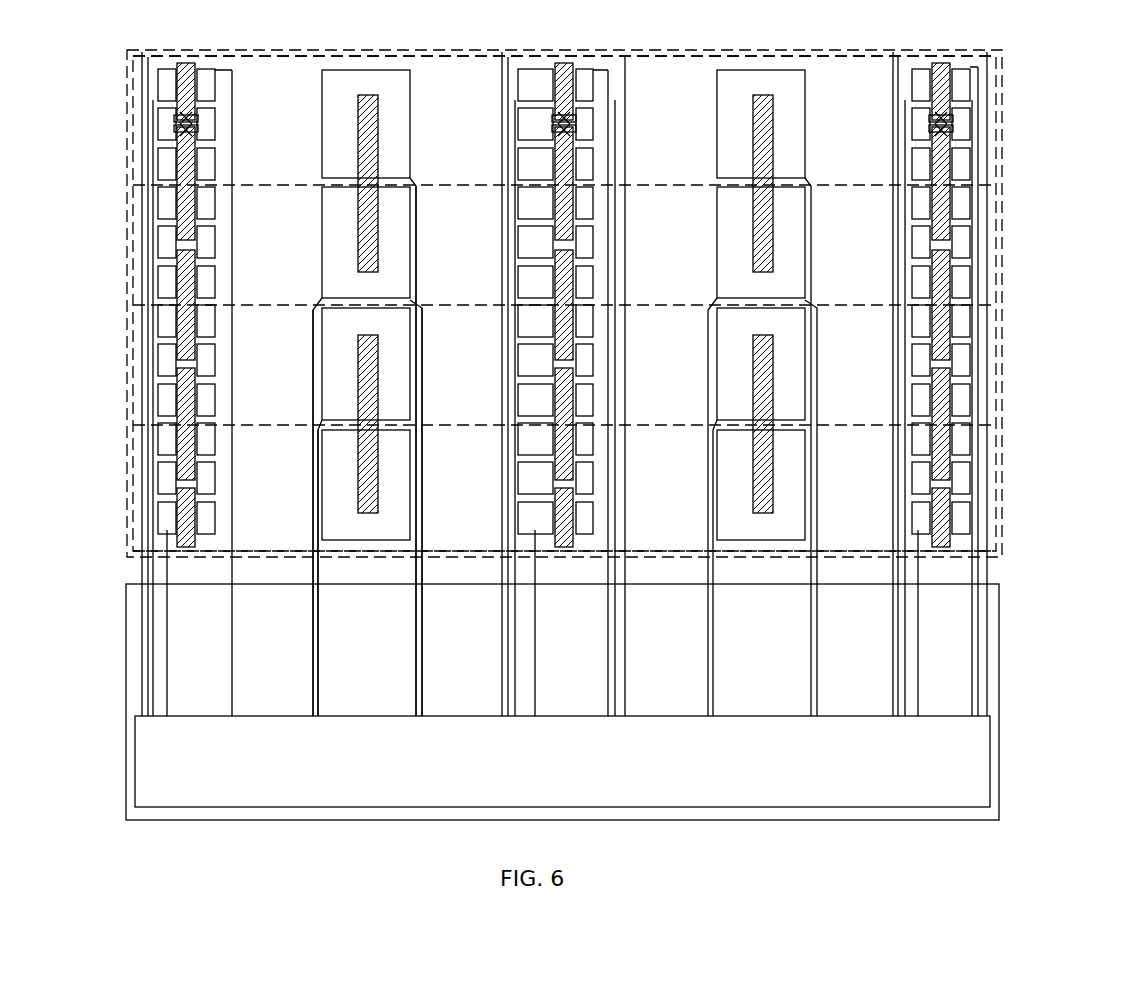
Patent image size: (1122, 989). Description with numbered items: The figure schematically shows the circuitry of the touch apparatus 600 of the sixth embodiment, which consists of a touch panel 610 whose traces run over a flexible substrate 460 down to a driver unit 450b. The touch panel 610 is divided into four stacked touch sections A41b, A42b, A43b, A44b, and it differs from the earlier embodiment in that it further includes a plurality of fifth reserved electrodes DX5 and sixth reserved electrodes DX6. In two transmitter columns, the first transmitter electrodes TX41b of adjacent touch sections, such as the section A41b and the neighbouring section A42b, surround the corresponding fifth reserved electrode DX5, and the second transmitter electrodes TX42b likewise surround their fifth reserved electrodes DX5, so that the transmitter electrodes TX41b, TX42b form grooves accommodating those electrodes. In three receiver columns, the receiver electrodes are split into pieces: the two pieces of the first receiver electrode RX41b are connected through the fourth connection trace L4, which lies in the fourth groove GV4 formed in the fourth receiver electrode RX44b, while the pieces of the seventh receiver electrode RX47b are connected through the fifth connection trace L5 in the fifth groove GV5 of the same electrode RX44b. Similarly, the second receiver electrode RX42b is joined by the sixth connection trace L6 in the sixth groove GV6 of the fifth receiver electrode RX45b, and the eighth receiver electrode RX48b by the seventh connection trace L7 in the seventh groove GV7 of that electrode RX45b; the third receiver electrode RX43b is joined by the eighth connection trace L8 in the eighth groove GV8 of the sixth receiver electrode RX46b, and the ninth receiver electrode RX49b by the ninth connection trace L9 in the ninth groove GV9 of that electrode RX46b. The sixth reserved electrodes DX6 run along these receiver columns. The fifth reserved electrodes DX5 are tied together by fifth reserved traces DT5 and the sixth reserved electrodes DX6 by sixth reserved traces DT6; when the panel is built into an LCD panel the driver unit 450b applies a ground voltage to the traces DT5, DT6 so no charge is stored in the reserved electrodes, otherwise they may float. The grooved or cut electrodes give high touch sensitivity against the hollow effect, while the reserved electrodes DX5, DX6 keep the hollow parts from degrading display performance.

The touch apparatus 600 is at (606, 442).
The touch panel 610 is at (1003, 67).
The flexible substrate 460 is at (1000, 681).
The driver unit 450b is at (990, 762).
The touch section A41b is at (1003, 178).
The touch section A42b is at (1003, 280).
The touch section A43b is at (1003, 400).
The touch section A44b is at (1003, 520).
The fifth reserved trace DT5 is at (422, 195).
The sixth reserved trace DT6 is at (140, 57).
The fifth reserved electrode DX5 is at (358, 210).
The sixth reserved electrode DX6 is at (185, 63).
The first transmitter electrode TX41b is at (367, 392).
The second transmitter electrode TX42b is at (762, 392).
The first receiver electrode RX41b is at (135, 301).
The second receiver electrode RX42b is at (515, 301).
The third receiver electrode RX43b is at (900, 301).
The fourth receiver electrode RX44b is at (135, 301).
The fifth receiver electrode RX45b is at (515, 301).
The sixth receiver electrode RX46b is at (900, 301).
The seventh receiver electrode RX47b is at (135, 301).
The eighth receiver electrode RX48b is at (515, 301).
The ninth receiver electrode RX49b is at (900, 301).
The fourth groove GV4 is at (190, 114).
The fifth groove GV5 is at (190, 132).
The sixth groove GV6 is at (567, 114).
The seventh groove GV7 is at (567, 132).
The eighth groove GV8 is at (945, 115).
The ninth groove GV9 is at (945, 129).
The fourth connection trace L4 is at (192, 120).
The fifth connection trace L5 is at (192, 128).
The sixth connection trace L6 is at (552, 120).
The seventh connection trace L7 is at (552, 128).
The eighth connection trace L8 is at (949, 120).
The ninth connection trace L9 is at (949, 128).